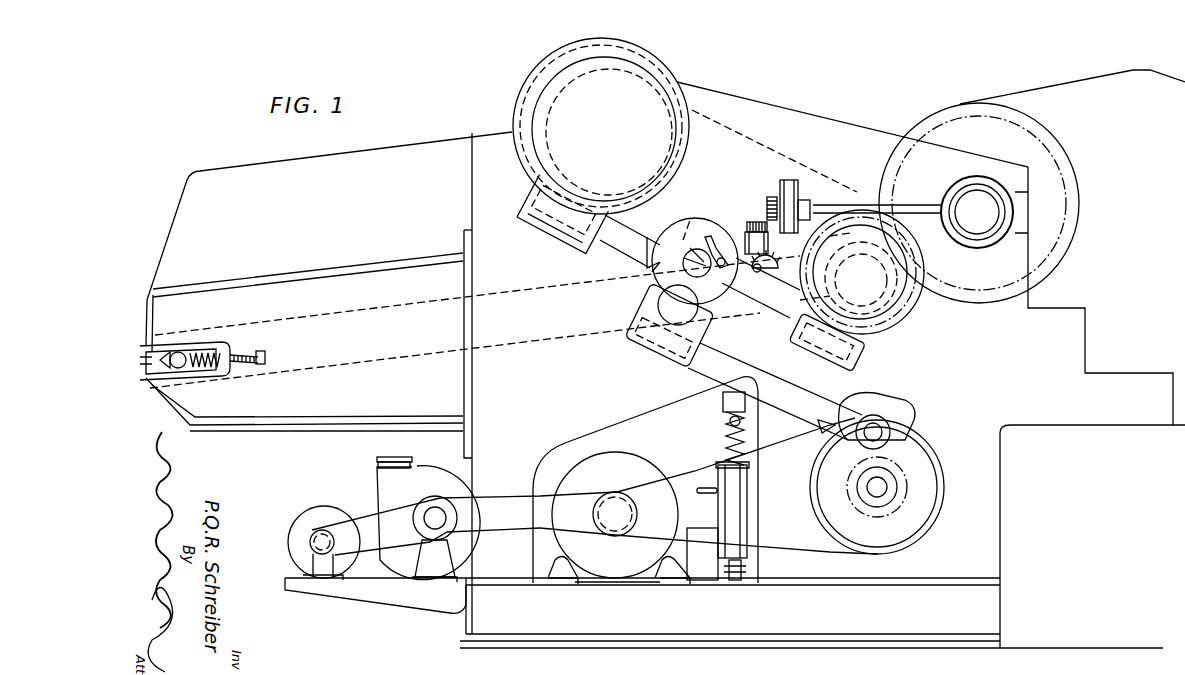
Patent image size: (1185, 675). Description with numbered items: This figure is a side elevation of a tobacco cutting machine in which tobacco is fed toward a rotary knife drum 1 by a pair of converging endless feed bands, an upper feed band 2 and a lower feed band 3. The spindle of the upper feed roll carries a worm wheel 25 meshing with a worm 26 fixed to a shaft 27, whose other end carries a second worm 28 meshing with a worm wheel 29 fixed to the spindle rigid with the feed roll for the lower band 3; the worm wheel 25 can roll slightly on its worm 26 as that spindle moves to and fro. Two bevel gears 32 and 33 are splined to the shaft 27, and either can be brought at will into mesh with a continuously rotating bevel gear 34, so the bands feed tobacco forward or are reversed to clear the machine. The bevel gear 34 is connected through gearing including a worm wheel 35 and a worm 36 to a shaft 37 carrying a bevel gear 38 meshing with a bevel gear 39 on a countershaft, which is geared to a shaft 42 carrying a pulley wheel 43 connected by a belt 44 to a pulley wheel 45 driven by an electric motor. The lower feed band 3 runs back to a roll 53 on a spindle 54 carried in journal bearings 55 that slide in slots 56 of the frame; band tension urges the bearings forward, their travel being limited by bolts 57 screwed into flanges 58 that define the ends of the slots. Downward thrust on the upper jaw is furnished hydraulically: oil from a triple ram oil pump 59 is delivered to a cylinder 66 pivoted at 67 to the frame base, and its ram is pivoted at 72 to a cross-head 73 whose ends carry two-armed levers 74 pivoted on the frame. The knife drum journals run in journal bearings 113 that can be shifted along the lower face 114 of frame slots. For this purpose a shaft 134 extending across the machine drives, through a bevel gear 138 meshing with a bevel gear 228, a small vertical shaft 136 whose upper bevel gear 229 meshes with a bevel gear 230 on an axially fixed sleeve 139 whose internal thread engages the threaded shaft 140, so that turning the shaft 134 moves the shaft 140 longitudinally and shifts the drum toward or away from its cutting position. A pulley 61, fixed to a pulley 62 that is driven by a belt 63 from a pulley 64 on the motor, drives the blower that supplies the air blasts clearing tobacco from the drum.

The rotary knife drum 1 is at (1077, 205).
The upper feed band 2 is at (760, 146).
The lower feed band 3 is at (490, 291).
The worm wheel 25 is at (678, 72).
The worm 26 is at (576, 238).
The shaft 27 is at (630, 240).
The second worm 28 is at (882, 339).
The worm wheel 29 is at (908, 318).
The bevel gear 32 is at (689, 232).
The bevel gear 33 is at (712, 234).
The bevel gear 34 is at (706, 236).
The worm wheel 35 is at (712, 316).
The worm 36 is at (662, 348).
The shaft 37 is at (742, 369).
The bevel gear 38 is at (866, 417).
The bevel gear 39 is at (888, 422).
The shaft 42 is at (880, 486).
The pulley wheel 43 is at (910, 467).
The belt 44 is at (810, 443).
The pulley wheel 45 is at (647, 465).
The roll 53 is at (183, 373).
The spindle 54 is at (180, 357).
The journal bearings 55 is at (203, 370).
The slots 56 is at (217, 347).
The bolts 57 is at (265, 358).
The flanges 58 is at (232, 348).
The triple ram oil pump 59 is at (708, 532).
The pulley 61 is at (416, 510).
The blower pulley 62 is at (436, 512).
The belt 63 is at (567, 533).
The hub 64 is at (631, 504).
The cylinder 66 is at (744, 509).
The pivot 67 is at (745, 564).
The pivot 72 is at (745, 424).
The cross-head 73 is at (728, 405).
The two-armed levers 74 is at (742, 418).
The journal bearing 113 is at (957, 191).
The lower face of slot 114 is at (1010, 233).
The shaft 134 is at (775, 308).
The small vertical shaft 136 is at (770, 260).
The bevel gear 138 is at (775, 290).
The sleeve 139 is at (800, 203).
The shaft 140 is at (880, 206).
The bevel gear 228 is at (770, 272).
The bevel gear 229 is at (752, 222).
The bevel gear 230 is at (769, 200).